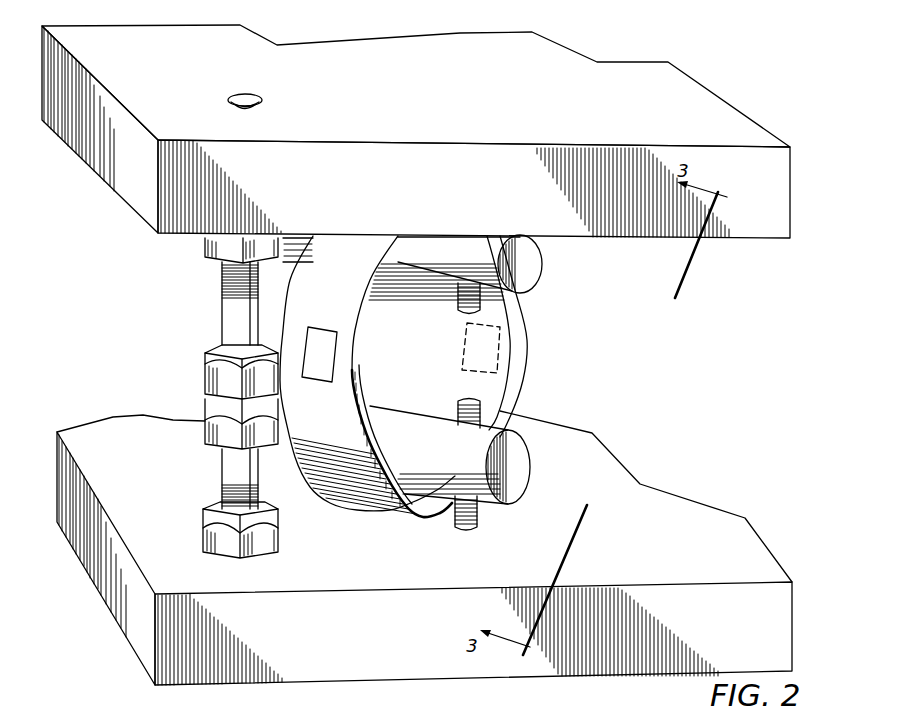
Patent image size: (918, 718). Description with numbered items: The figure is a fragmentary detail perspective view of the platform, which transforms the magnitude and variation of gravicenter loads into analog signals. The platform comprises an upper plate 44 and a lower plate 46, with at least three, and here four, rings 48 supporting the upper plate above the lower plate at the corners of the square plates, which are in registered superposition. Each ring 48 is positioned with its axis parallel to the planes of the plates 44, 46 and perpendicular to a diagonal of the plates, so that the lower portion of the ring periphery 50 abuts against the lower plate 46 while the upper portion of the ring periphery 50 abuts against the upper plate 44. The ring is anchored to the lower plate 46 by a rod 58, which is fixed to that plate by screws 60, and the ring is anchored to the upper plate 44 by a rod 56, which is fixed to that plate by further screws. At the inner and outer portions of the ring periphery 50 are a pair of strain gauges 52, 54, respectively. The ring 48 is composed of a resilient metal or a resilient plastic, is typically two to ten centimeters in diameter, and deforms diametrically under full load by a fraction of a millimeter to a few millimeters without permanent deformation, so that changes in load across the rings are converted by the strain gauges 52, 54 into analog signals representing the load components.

The upper plate 44 is at (780, 146).
The lower plate 46 is at (358, 645).
The ring 48 is at (550, 369).
The ring periphery 50 is at (305, 298).
The strain gauge 52 is at (305, 328).
The strain gauge 54 is at (512, 340).
The rod 56 is at (542, 270).
The rod 58 is at (531, 467).
The screw 60 is at (478, 520).